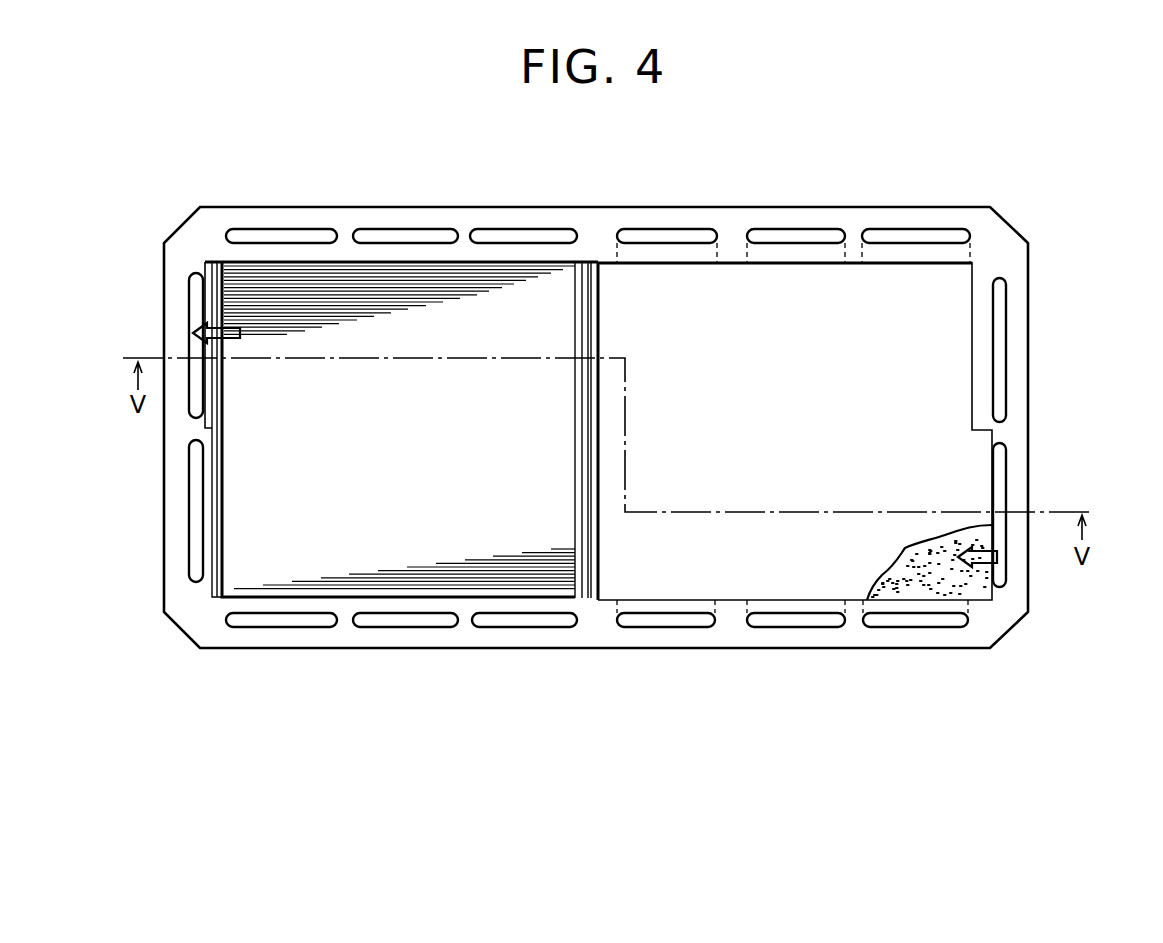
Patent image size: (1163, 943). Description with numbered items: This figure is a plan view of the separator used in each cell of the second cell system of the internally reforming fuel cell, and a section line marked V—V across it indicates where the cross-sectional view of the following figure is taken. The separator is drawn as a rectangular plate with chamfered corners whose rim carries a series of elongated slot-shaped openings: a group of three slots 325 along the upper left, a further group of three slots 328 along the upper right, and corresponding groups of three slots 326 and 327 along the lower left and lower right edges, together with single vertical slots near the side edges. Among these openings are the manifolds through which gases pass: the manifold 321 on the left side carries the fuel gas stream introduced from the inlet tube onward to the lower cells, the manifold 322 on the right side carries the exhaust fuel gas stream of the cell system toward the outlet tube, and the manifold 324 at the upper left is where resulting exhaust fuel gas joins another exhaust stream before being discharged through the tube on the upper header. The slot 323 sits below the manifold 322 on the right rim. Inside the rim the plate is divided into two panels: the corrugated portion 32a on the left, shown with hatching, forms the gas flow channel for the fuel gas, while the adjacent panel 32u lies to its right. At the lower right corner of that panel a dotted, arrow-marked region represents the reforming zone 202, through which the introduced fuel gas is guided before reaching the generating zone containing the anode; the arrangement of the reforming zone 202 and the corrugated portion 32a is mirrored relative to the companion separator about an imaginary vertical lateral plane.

The reforming zone 202 is at (980, 587).
The corrugated portion 32a is at (265, 563).
The fresh toner accommodating chamber 32u is at (622, 565).
The manifold 321 is at (197, 547).
The manifold 322 is at (1005, 343).
The right lower slot opening 323 is at (1002, 468).
The manifold 324 is at (193, 349).
The upper left slot openings 325 is at (500, 235).
The lower left slot openings 326 is at (293, 620).
The lower right slot openings 327 is at (683, 621).
The upper right slot openings 328 is at (885, 233).